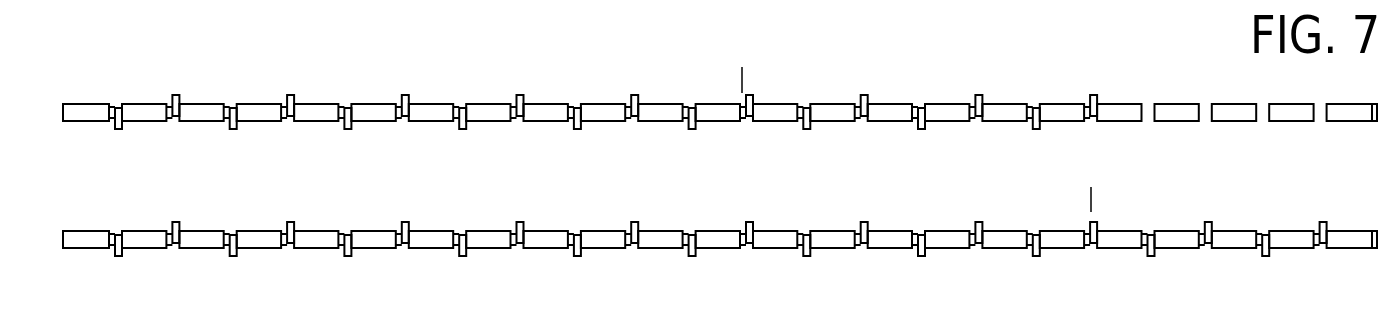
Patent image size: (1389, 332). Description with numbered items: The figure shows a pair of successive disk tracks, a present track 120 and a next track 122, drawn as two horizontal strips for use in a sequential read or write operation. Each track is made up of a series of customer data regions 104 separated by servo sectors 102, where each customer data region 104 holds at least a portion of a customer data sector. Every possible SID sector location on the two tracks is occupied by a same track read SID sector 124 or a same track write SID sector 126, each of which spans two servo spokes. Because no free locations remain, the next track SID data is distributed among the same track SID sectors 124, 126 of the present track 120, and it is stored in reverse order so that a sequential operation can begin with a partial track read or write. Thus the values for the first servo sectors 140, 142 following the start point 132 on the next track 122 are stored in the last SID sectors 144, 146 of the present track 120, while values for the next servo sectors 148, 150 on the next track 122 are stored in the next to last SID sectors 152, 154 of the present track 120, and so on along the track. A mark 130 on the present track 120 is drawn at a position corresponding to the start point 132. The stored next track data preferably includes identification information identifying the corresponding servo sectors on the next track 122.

The present track 120 is at (707, 79).
The next track 122 is at (707, 225).
The customer data region 104 is at (202, 103).
The servo sector 102 is at (229, 128).
The same track write SID sector 126 is at (347, 129).
The same track read SID sector 124 is at (405, 95).
The next to last SID sector 154 is at (520, 95).
The next to last SID sector 152 is at (577, 106).
The last SID sector 146 is at (635, 95).
The last SID sector 144 is at (692, 106).
The reference position 130 is at (742, 80).
The start point 132 is at (1092, 203).
The first servo sector 140 is at (1142, 252).
The first servo sector 142 is at (1203, 252).
The next servo sector 148 is at (1260, 252).
The next servo sector 150 is at (1317, 252).